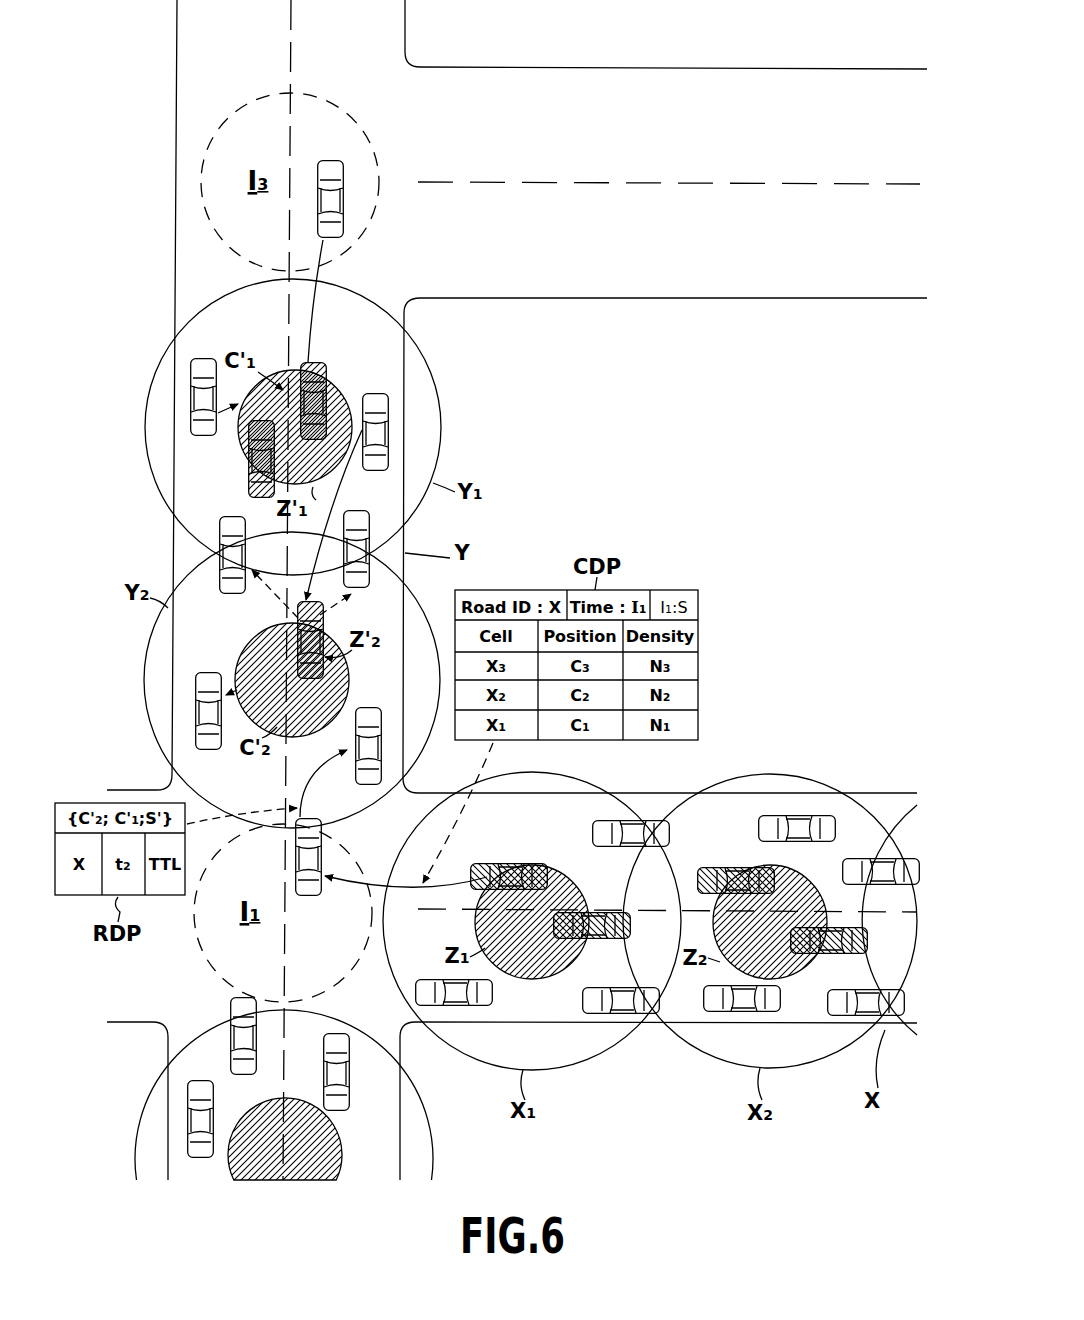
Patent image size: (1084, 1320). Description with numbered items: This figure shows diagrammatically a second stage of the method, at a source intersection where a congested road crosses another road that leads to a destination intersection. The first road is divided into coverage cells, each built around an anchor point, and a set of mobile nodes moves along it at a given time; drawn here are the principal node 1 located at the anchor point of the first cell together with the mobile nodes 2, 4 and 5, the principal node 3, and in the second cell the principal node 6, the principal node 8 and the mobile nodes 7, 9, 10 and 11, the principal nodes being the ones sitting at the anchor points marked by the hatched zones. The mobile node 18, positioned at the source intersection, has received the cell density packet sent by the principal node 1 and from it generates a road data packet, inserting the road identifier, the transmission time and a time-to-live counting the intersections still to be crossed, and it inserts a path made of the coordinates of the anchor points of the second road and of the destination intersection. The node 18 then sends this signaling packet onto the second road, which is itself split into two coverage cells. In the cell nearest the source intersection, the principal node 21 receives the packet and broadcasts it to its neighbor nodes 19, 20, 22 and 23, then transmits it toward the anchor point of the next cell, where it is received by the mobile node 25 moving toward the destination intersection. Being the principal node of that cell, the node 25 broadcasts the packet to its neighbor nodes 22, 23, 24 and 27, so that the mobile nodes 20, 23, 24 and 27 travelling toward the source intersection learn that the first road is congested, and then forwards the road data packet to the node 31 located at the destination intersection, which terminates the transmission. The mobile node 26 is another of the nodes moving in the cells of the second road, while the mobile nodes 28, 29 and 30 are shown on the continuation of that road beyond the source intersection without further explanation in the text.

The principal node 1 is at (522, 863).
The mobile node 2 is at (478, 1007).
The principal node 3 is at (615, 938).
The mobile node 4 is at (600, 834).
The mobile node 5 is at (582, 998).
The principal node 6 is at (712, 868).
The mobile node 7 is at (740, 1012).
The principal node 8 is at (850, 952).
The mobile node 9 is at (765, 825).
The mobile node 10 is at (920, 870).
The mobile node 11 is at (905, 1003).
The mobile node 18 is at (310, 898).
The neighbor node 19 is at (372, 785).
The mobile node 20 is at (212, 750).
The principal node 21 is at (305, 603).
The neighbor node 22 is at (366, 516).
The mobile node 23 is at (233, 590).
The mobile node 24 is at (258, 487).
The principal node 25 is at (388, 433).
The mobile node 26 is at (322, 368).
The neighbor node 27 is at (205, 434).
The vehicle 28 is at (240, 1036).
The vehicle 29 is at (200, 1148).
The vehicle 30 is at (345, 1045).
The node 31 is at (328, 166).